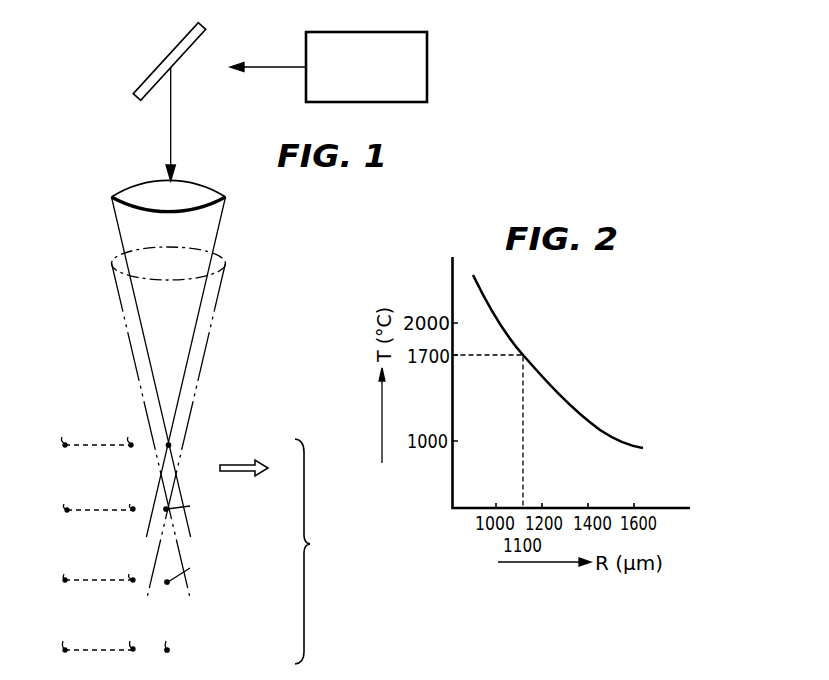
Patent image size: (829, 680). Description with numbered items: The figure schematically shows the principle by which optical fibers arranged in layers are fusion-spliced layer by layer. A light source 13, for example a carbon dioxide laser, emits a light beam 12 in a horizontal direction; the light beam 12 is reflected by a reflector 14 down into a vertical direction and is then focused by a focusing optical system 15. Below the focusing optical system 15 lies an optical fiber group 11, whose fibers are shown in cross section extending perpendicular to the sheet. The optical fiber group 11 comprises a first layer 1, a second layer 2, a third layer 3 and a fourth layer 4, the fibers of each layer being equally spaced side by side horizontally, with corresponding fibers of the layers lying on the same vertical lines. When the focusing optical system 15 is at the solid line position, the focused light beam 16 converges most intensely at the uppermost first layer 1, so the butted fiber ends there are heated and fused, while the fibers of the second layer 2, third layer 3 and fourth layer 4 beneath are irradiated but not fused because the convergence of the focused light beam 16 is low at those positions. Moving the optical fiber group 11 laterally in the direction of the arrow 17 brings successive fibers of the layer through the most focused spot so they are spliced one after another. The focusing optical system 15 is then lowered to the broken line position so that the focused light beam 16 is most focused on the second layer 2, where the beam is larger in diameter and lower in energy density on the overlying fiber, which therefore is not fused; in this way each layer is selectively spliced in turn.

The first layer 1 is at (170, 445).
The second layer 2 is at (219, 497).
The third layer 3 is at (215, 570).
The fourth layer 4 is at (200, 635).
The optical fiber group 11 is at (317, 551).
The light beam 12 is at (257, 66).
The light source 13 is at (380, 33).
The reflector 14 is at (190, 33).
The focusing optical system 15 is at (203, 192).
The focused light beam 16 is at (219, 229).
The arrow 17 is at (261, 463).